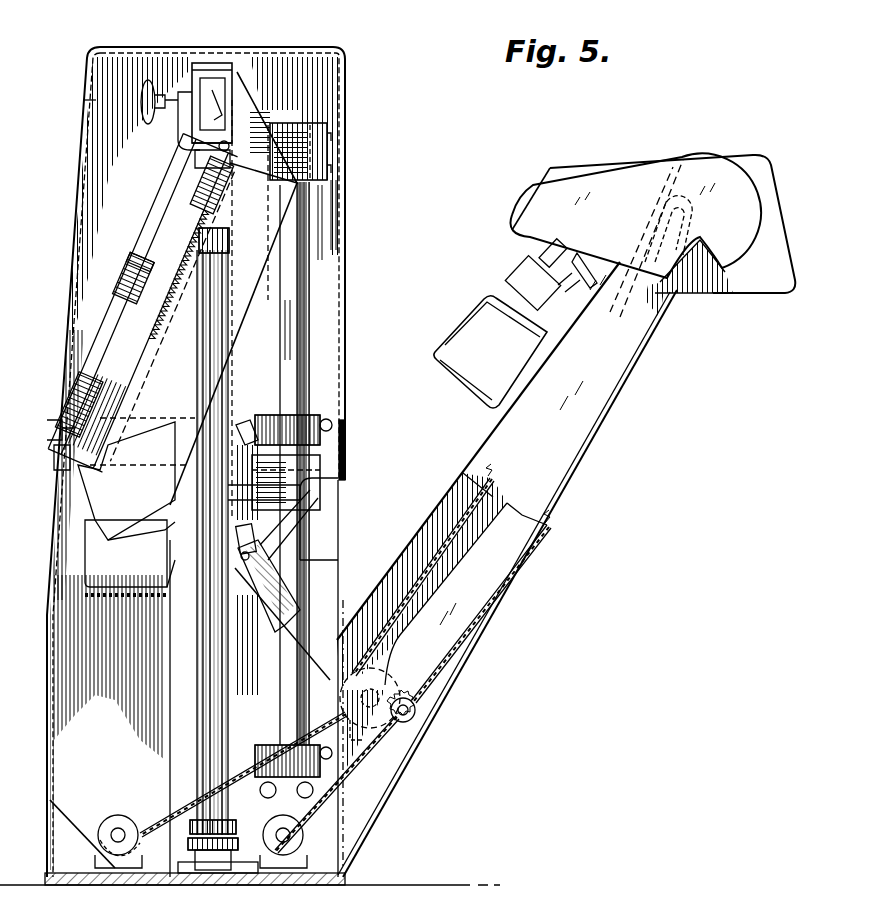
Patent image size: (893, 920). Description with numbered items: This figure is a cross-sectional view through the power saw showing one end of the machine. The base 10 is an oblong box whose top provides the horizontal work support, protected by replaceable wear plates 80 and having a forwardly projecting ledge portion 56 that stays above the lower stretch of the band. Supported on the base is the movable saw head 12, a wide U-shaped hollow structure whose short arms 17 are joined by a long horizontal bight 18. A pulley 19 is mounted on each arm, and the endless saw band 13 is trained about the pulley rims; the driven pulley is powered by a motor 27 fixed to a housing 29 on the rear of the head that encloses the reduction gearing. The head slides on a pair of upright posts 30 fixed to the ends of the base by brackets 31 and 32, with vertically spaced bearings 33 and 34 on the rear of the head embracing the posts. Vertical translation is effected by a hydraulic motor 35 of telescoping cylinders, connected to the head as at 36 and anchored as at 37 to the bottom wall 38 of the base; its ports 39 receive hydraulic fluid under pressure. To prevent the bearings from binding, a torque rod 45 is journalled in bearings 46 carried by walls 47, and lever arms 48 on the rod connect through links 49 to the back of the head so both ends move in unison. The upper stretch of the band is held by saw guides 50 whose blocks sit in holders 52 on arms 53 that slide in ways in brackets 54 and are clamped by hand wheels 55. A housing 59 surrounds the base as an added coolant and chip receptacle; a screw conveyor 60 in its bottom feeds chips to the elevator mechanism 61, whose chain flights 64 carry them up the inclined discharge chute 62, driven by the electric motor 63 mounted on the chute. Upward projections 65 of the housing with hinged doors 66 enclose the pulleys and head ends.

The base 10 is at (160, 772).
The movable saw head 12 is at (93, 523).
The endless saw band 13 is at (195, 245).
The arms 17 is at (277, 225).
The bight 18 is at (150, 570).
The pulley 19 is at (118, 268).
The motor 27 is at (330, 490).
The housing 29 is at (290, 375).
The upright posts 30 is at (290, 315).
The bracket 31 is at (322, 440).
The bracket 32 is at (285, 745).
The bearing 33 is at (318, 150).
The bearing 34 is at (318, 472).
The hydraulic motor 35 is at (200, 432).
The connection to movable head 36 is at (230, 240).
The anchorage 37 is at (205, 872).
The bottom wall 38 is at (298, 880).
The ports 39 is at (225, 875).
The torque rod 45 is at (410, 695).
The bearings 46 is at (412, 750).
The walls 47 is at (335, 545).
The lever arms 48 is at (296, 625).
The links 49 is at (195, 525).
The saw guides 50 is at (220, 85).
The holders 52 is at (200, 160).
The arms 53 is at (205, 85).
The brackets 54 is at (255, 90).
The hand wheels 55 is at (148, 118).
The ledge portion 56 is at (54, 458).
The housing 59 is at (50, 775).
The screw conveyor 60 is at (122, 822).
The elevator mechanism 61 is at (512, 615).
The inclined discharge chute 62 is at (590, 418).
The electric motor 63 is at (462, 318).
The flights 64 is at (460, 645).
The upward projections of the housing 65 is at (340, 66).
The hinged doors 66 is at (93, 105).
The wear plates 80 is at (58, 420).